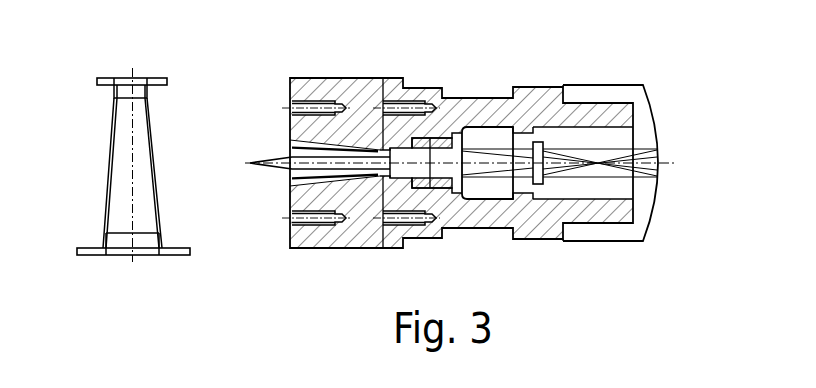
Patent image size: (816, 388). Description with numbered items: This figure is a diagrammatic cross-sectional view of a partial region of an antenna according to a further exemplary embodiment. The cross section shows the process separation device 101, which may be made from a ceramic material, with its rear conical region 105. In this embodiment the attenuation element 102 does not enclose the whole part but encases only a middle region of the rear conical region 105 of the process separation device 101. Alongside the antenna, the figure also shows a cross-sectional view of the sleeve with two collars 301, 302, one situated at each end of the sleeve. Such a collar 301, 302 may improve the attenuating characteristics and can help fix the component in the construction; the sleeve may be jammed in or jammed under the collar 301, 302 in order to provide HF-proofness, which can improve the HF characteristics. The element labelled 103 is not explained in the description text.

The process separation device 101 is at (478, 168).
The attenuation element 102 is at (483, 150).
The needle 103 is at (289, 166).
The rear conical region 105 is at (617, 152).
The collar 301 is at (158, 78).
The collar 302 is at (178, 255).